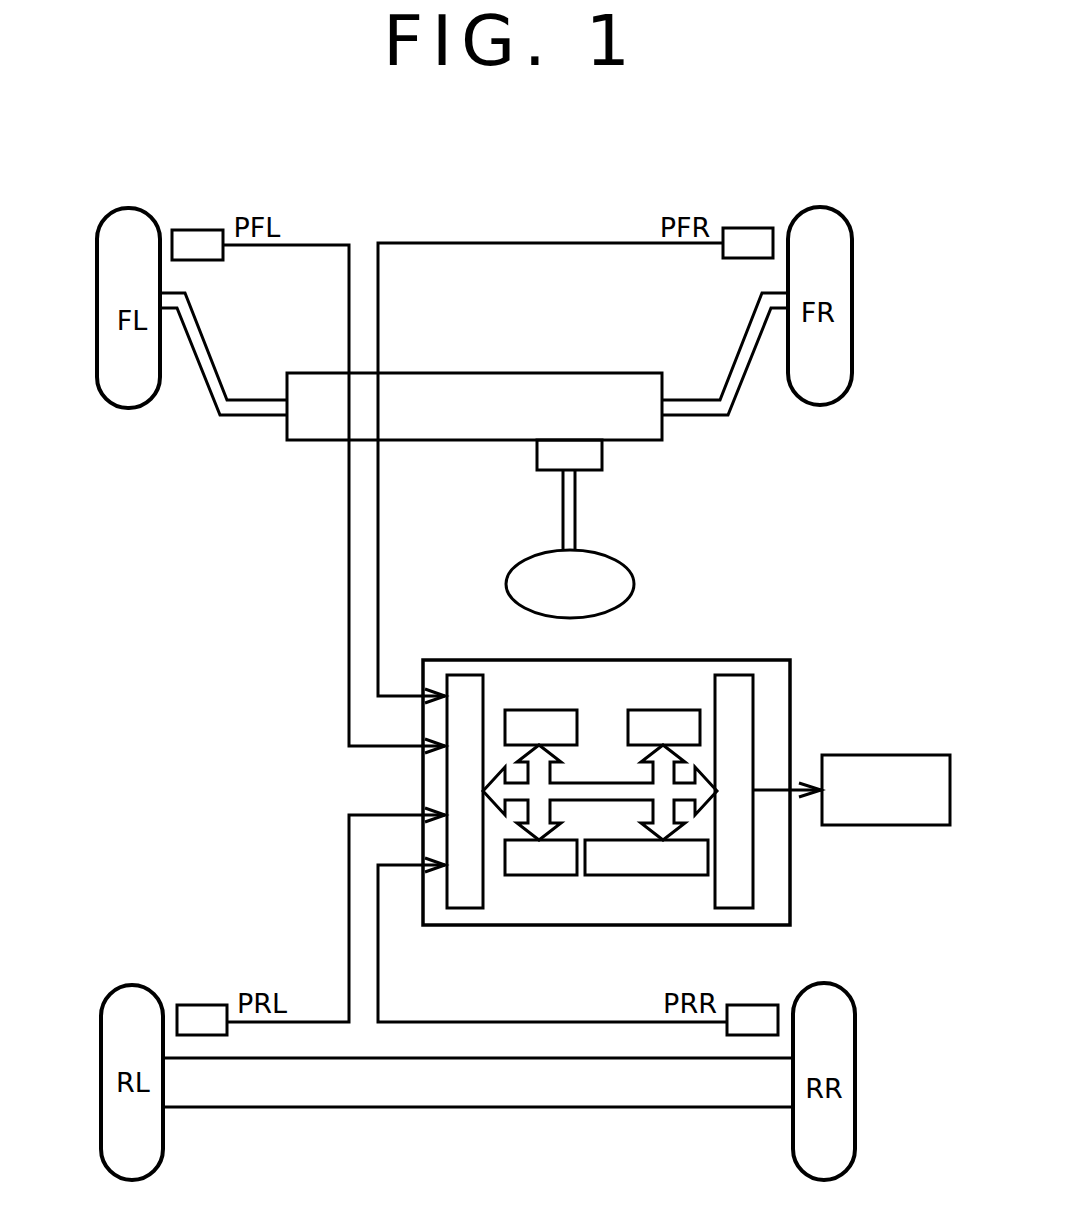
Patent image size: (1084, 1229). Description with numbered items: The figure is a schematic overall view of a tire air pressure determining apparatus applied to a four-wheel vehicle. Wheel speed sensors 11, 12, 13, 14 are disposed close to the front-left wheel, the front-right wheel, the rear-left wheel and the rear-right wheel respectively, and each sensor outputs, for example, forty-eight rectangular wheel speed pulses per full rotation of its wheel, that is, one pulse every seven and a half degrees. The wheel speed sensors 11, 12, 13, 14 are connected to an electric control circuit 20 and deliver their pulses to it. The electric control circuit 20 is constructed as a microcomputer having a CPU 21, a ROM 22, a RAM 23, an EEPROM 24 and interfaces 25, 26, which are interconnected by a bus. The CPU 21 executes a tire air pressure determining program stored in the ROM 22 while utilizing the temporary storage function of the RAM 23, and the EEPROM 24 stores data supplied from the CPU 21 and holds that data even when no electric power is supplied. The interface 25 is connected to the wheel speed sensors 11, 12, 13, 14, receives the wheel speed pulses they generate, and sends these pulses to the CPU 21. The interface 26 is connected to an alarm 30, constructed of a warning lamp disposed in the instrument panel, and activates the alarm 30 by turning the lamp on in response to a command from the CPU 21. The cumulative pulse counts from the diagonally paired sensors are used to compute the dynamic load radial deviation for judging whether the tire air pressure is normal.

The wheel speed sensor 11 is at (197, 230).
The wheel speed sensor 12 is at (748, 228).
The wheel speed sensor 13 is at (197, 1005).
The wheel speed sensor 14 is at (750, 1005).
The electric control circuit 20 is at (766, 658).
The CPU 21 is at (540, 710).
The ROM 22 is at (664, 710).
The RAM 23 is at (541, 877).
The EEPROM 24 is at (645, 877).
The interface 25 is at (462, 673).
The interface 26 is at (732, 673).
The alarm 30 is at (883, 755).